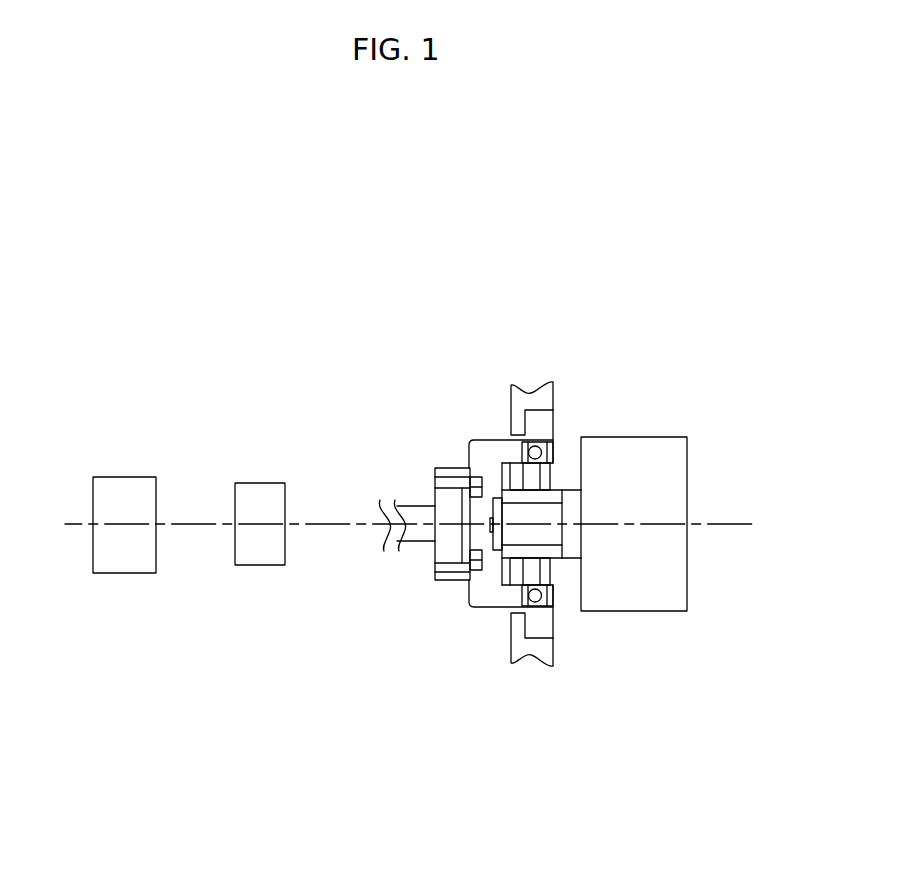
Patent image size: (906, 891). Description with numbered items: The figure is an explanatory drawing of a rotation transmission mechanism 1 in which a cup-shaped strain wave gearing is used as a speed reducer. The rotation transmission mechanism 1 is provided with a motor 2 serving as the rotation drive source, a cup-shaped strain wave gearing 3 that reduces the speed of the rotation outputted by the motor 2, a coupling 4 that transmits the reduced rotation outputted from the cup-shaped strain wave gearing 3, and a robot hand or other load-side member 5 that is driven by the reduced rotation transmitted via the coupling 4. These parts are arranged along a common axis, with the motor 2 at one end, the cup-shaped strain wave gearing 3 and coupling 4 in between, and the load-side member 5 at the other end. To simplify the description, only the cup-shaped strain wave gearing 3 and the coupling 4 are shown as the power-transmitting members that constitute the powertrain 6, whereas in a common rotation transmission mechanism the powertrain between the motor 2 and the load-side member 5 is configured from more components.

The rotation transmission mechanism 1 is at (542, 352).
The motor 2 is at (647, 432).
The cup-shaped strain wave gearing 3 is at (470, 430).
The coupling 4 is at (272, 465).
The load-side member 5 is at (143, 465).
The powertrain 6 is at (572, 692).